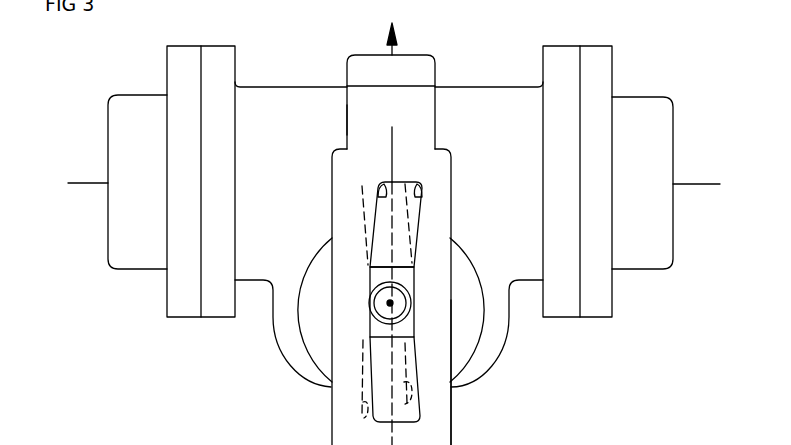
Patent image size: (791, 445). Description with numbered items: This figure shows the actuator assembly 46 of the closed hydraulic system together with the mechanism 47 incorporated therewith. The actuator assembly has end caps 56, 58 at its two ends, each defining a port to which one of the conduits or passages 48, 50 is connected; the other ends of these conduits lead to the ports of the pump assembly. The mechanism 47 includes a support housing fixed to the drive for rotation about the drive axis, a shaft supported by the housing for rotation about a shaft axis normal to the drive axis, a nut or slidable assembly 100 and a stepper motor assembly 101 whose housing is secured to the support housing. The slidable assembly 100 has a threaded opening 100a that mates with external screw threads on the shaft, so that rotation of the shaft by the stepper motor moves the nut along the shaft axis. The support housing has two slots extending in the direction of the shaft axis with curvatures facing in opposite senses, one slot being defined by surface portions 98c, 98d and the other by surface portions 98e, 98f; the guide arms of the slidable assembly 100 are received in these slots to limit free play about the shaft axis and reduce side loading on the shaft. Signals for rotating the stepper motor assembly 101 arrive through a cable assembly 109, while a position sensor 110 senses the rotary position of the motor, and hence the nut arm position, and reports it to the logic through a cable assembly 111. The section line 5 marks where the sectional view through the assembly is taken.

The section line 5— 5 is at (392, 127).
The actuator assembly 46 is at (280, 72).
The mechanism 47 is at (466, 430).
The conduit 48 is at (85, 183).
The conduit 50 is at (697, 185).
The end cap 56 is at (129, 95).
The end cap 58 is at (637, 97).
The surface portion 98c is at (362, 415).
The surface portion 98d is at (410, 388).
The surface portion 98e is at (380, 198).
The surface portion 98f is at (419, 183).
The slidable assembly 100 is at (370, 259).
The threaded opening 100a is at (392, 301).
The stepper motor assembly 101 is at (347, 97).
The cable assembly 109 is at (332, 118).
The position sensor 110 is at (437, 78).
The cable assembly 111 is at (392, 50).